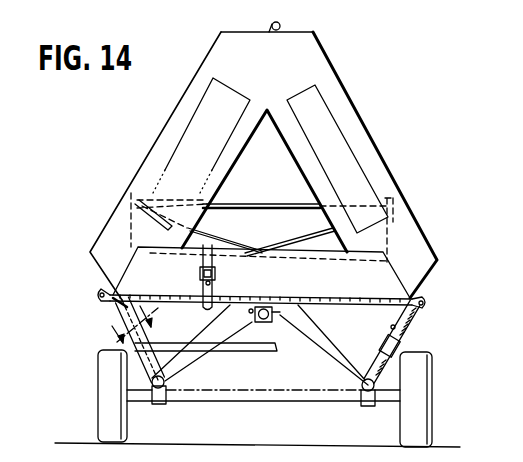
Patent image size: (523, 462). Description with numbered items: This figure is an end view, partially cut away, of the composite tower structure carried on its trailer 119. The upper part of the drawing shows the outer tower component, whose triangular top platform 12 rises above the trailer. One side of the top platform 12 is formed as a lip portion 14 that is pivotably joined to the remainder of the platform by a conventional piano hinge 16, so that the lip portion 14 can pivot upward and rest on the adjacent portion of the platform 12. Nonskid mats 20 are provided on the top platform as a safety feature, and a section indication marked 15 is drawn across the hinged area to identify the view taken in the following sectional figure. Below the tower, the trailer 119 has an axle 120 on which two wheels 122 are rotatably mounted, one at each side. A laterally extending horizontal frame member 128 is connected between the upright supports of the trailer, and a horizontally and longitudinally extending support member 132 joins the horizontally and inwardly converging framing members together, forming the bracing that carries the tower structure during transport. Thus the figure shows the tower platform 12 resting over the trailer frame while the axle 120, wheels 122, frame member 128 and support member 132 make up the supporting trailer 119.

The top platform 12 is at (350, 98).
The lip portion 14 is at (238, 256).
The section line 15- 15 is at (131, 327).
The piano hinge 16 is at (378, 306).
The nonskid mats 20 is at (217, 138).
The trailer 119 is at (412, 343).
The axle 120 is at (285, 401).
The wheels 122 is at (112, 388).
The horizontal frame member 128 is at (256, 346).
The support member 132 is at (265, 324).